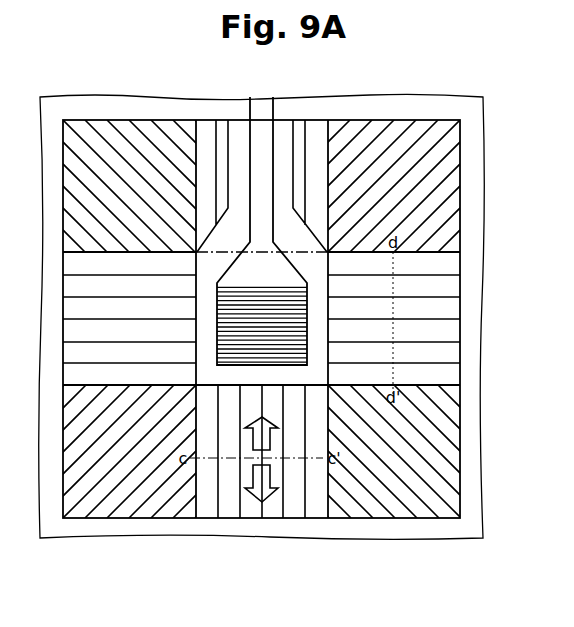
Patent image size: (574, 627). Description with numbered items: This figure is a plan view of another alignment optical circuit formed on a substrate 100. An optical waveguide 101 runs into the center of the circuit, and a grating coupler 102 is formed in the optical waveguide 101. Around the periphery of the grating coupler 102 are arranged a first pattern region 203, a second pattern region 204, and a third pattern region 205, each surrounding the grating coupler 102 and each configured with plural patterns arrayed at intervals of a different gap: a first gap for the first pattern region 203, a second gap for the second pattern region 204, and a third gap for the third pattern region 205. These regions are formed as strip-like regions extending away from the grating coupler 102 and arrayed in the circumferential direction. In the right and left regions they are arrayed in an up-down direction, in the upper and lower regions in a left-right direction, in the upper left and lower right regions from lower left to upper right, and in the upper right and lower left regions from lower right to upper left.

The substrate 100 is at (483, 138).
The optical waveguide 101 is at (274, 142).
The grating coupler 102 is at (212, 315).
The first pattern region 203 is at (450, 548).
The second pattern region 204 is at (426, 568).
The third pattern region 205 is at (337, 518).